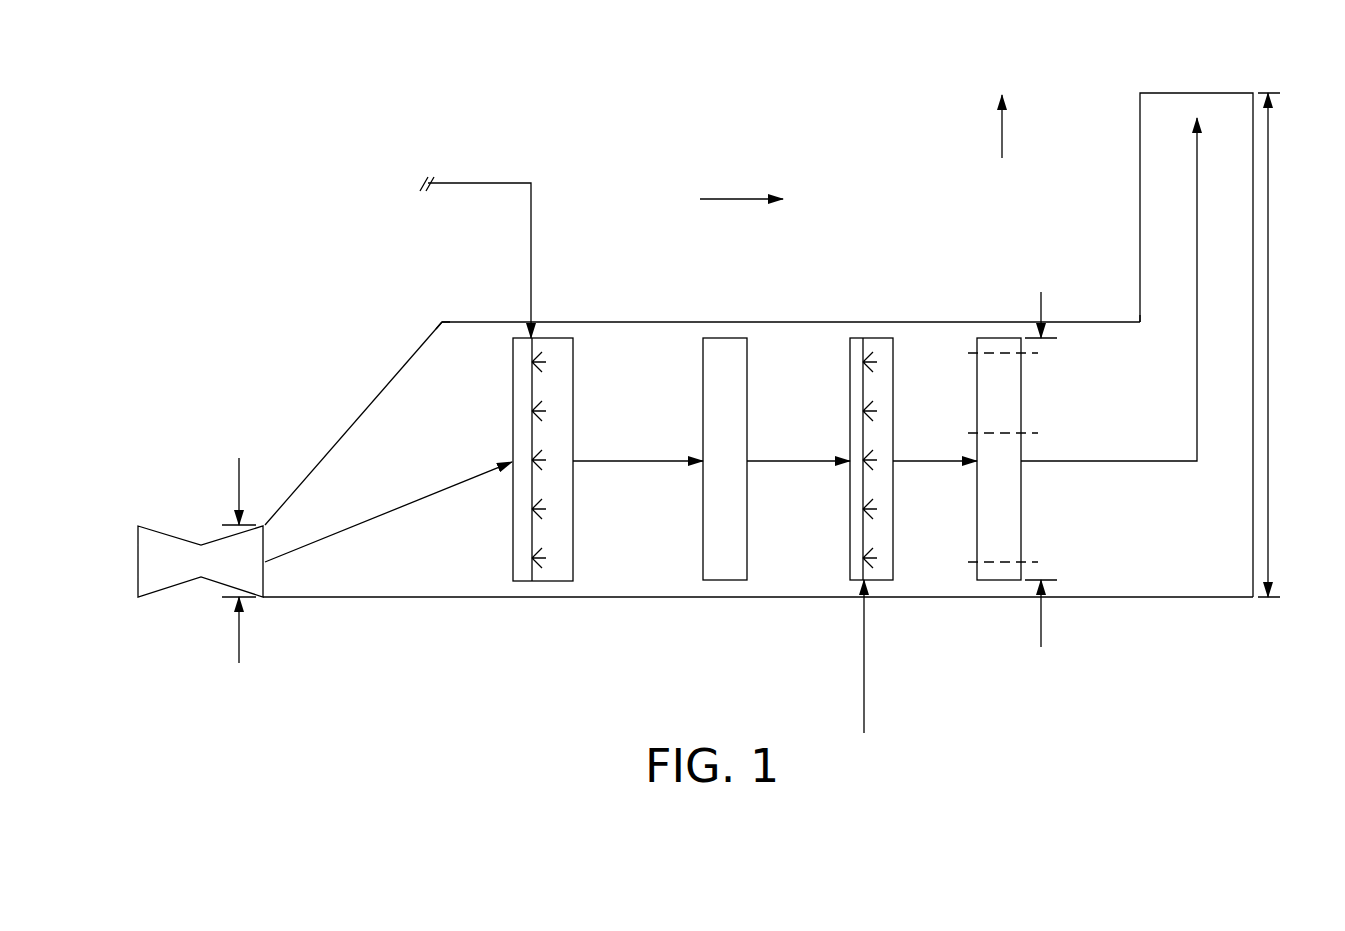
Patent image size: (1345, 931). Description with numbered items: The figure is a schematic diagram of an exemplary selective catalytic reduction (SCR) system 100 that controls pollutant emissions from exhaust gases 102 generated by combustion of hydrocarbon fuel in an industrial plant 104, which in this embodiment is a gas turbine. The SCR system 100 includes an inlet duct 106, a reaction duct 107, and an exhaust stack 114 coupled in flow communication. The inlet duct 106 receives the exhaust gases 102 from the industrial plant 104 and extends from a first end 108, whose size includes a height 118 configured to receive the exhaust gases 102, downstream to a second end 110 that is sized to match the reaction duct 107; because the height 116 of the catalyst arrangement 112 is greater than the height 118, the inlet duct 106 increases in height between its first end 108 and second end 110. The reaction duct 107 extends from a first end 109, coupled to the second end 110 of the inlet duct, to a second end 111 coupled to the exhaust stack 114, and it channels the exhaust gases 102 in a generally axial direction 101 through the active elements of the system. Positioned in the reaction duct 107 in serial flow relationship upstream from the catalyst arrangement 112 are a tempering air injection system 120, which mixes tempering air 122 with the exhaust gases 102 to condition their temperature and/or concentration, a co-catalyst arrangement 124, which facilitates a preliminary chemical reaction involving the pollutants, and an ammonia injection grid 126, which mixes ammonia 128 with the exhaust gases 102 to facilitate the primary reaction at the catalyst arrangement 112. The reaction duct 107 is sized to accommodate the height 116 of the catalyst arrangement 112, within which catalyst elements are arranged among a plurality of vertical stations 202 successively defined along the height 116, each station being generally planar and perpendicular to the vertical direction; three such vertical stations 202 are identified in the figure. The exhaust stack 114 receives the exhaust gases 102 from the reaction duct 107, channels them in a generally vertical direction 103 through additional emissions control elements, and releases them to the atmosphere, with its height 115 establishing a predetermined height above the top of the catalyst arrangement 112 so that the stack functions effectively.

The selective catalytic reduction (SCR) system 100 is at (855, 130).
The axial direction 101 is at (738, 198).
The exhaust gases 102 is at (385, 512).
The vertical direction 103 is at (1002, 137).
The industrial plant 104 is at (200, 604).
The inlet duct 106 is at (352, 423).
The reaction duct 107 is at (650, 322).
The first end 108 is at (268, 460).
The first end 109 is at (452, 294).
The second end 110 is at (440, 311).
The second end 111 is at (1132, 307).
The catalyst arrangement 112 is at (1000, 338).
The exhaust stack 114 is at (1140, 130).
The height 115 is at (1268, 297).
The height 116 is at (1041, 292).
The height 118 is at (239, 643).
The tempering air injection system 120 is at (555, 338).
The tempering air 122 is at (483, 183).
The co-catalyst arrangement 124 is at (725, 338).
The ammonia injection grid 126 is at (865, 338).
The ammonia 128 is at (864, 685).
The vertical stations 202 is at (955, 352).